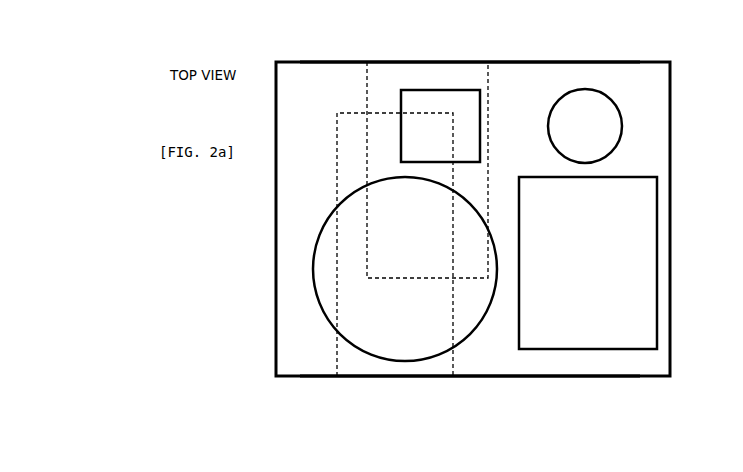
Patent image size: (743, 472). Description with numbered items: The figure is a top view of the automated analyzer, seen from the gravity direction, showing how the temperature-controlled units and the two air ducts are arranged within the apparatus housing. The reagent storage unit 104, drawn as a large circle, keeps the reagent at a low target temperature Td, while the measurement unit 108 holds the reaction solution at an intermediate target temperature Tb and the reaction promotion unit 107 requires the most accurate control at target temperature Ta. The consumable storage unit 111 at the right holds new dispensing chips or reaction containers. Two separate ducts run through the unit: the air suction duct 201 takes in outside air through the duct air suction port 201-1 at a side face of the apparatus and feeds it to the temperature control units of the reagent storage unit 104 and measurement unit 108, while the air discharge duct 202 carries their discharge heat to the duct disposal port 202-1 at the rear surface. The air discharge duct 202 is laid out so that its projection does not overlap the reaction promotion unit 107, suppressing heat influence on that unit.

The reagent storage unit 104 is at (322, 269).
The reaction promotion unit 107 is at (583, 102).
The measurement unit 108 is at (435, 99).
The consumable storage unit 111 is at (628, 292).
The air suction duct 201 is at (337, 353).
The duct air suction port 201-1 is at (363, 378).
The air discharge duct 202 is at (365, 173).
The duct disposal port 202-1 is at (416, 56).